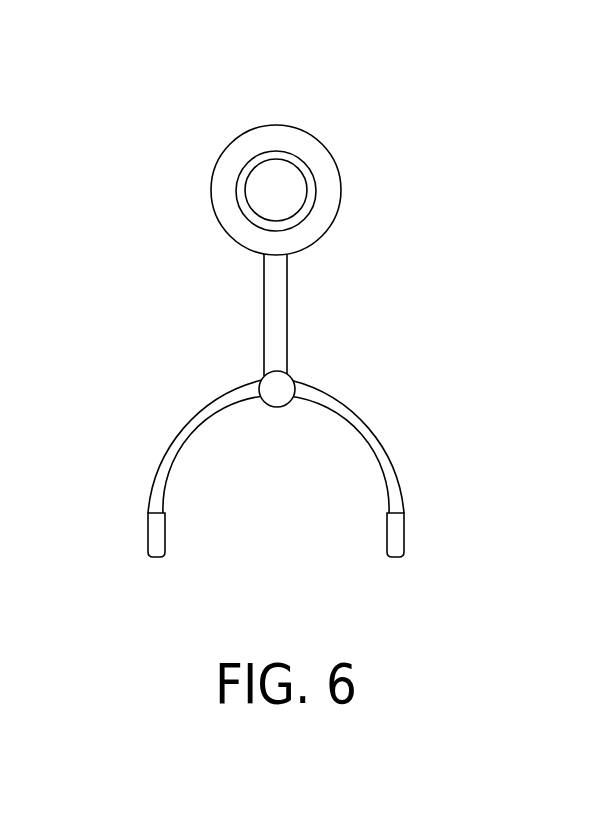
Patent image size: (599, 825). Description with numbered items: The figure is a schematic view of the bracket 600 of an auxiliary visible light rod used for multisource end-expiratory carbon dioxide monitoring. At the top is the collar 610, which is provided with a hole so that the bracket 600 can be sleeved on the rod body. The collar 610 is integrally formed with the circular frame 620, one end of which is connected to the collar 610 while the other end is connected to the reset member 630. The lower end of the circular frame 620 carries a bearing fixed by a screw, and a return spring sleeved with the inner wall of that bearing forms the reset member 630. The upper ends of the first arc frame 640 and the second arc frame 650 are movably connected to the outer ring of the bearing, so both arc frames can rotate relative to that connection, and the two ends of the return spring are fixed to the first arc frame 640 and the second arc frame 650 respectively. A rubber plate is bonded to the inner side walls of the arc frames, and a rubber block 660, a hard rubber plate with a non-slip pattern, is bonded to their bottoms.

The bracket 600 is at (341, 191).
The collar 610 is at (276, 190).
The circular frame 620 is at (288, 293).
The reset member 630 is at (273, 388).
The first arc frame 640 is at (186, 427).
The second arc frame 650 is at (357, 420).
The rubber block 660 is at (148, 527).